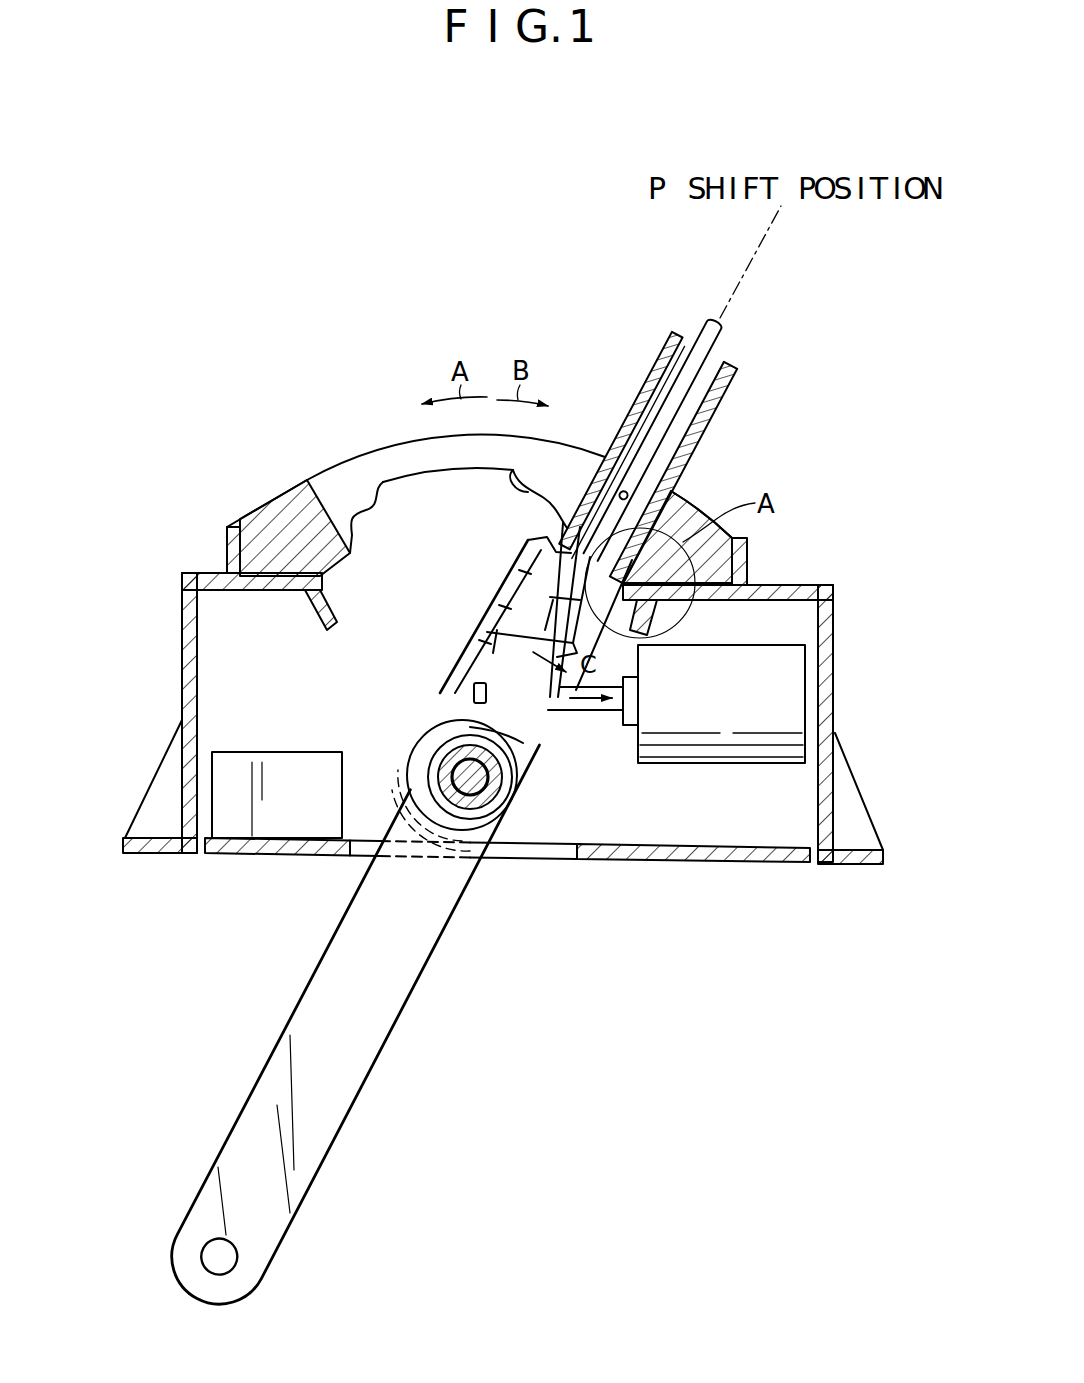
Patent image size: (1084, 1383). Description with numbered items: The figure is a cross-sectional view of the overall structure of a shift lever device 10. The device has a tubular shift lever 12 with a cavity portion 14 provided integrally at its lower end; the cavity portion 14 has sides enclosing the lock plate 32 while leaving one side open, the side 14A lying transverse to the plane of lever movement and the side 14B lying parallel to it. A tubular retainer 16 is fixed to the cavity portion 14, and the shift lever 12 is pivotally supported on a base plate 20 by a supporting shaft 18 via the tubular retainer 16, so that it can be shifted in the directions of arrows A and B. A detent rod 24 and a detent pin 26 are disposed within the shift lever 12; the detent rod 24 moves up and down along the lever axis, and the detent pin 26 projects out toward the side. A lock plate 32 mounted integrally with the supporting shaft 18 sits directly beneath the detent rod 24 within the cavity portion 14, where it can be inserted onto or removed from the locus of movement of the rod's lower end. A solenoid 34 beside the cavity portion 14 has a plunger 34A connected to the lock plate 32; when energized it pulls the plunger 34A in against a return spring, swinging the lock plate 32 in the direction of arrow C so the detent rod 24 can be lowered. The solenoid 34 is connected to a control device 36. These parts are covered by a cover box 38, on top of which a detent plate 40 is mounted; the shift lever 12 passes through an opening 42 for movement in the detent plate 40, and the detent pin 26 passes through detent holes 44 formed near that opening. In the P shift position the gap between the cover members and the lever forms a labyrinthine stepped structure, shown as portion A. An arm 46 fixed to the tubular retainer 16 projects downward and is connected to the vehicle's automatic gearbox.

The shift lever device 10 is at (372, 354).
The shift lever 12 is at (650, 377).
The cavity portion 14 is at (517, 613).
The side of cavity portion 14A is at (470, 694).
The side of cavity portion 14B is at (543, 742).
The tubular retainer 16 is at (527, 808).
The supporting shaft 18 is at (470, 795).
The base plate 20 is at (658, 862).
The detent rod 24 is at (700, 395).
The detent pin 26 is at (630, 492).
The lock plate 32 is at (520, 653).
The solenoid 34 is at (728, 764).
The plunger 34A is at (591, 712).
The control device 36 is at (282, 752).
The cover box 38 is at (792, 587).
The detent plate 40 is at (335, 470).
The opening for movement 42 is at (378, 465).
The detent holes 44 is at (520, 472).
The arm 46 is at (312, 982).